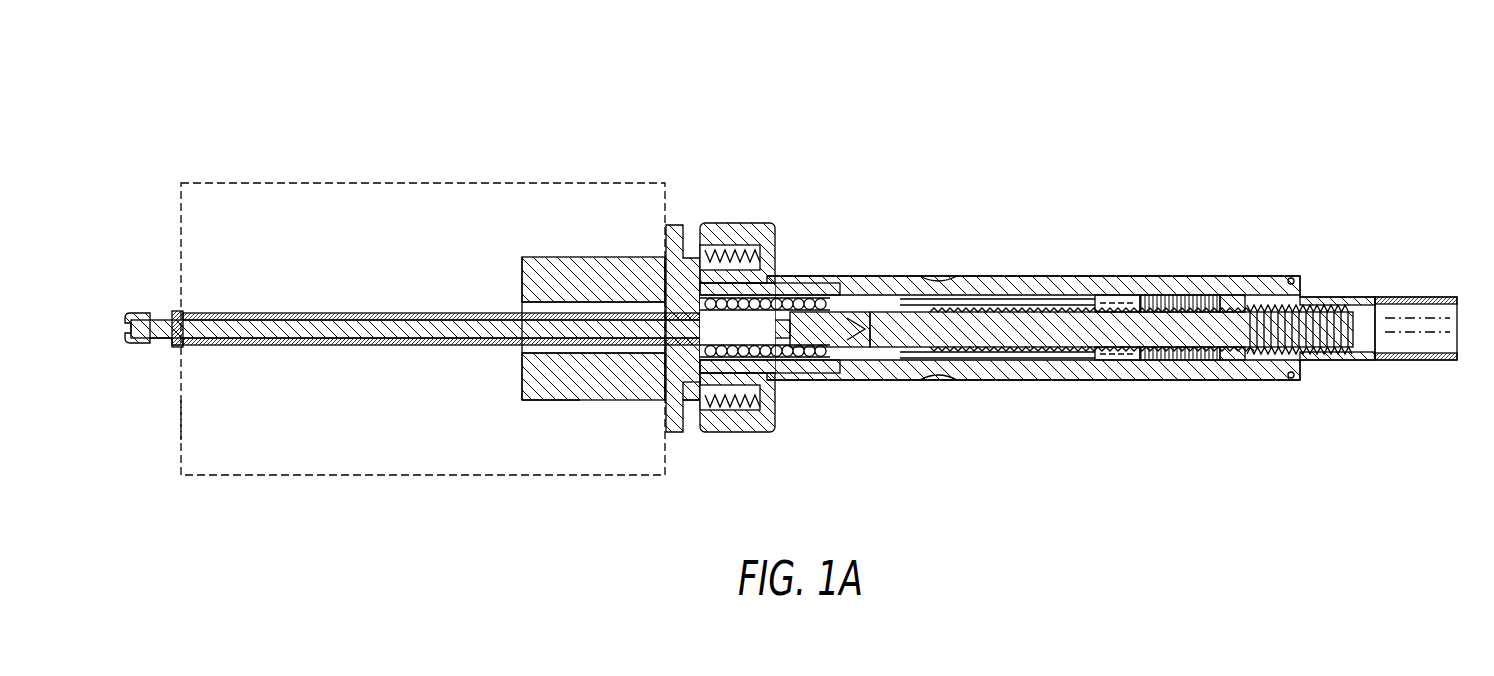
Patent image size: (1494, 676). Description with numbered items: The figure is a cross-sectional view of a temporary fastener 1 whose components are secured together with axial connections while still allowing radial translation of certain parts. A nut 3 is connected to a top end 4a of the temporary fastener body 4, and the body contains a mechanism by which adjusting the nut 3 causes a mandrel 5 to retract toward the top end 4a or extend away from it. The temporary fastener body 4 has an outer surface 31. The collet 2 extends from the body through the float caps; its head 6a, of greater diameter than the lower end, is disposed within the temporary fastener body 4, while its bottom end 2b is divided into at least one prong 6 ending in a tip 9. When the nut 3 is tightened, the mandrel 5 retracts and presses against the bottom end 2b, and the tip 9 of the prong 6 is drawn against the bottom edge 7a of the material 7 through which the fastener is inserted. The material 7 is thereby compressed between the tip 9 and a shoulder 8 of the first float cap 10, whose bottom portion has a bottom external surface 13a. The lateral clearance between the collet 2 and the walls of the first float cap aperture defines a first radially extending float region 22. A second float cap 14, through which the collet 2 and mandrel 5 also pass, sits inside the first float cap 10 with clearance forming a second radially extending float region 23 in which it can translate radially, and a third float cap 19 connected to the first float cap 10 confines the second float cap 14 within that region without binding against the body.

The temporary fastener 1 is at (1109, 138).
The collet 2 is at (430, 318).
The bottom end of the collet 2b is at (172, 353).
The nut 3 is at (1426, 330).
The temporary fastener body 4 is at (989, 392).
The top end of the temporary fastener body 4a is at (1403, 290).
The mandrel 5 is at (131, 306).
The prong 6 is at (254, 313).
The head 6a is at (806, 277).
The material 7 is at (275, 425).
The bottom edge of the material 7a is at (180, 418).
The shoulder 8 is at (662, 246).
The tip 9 is at (177, 309).
The first float cap 10 is at (610, 385).
The bottom external surface 13a is at (540, 398).
The second float cap 14 is at (690, 405).
The third float cap 19 is at (786, 238).
The first radially extending float region 22 is at (580, 345).
The second radially extending float region 23 is at (737, 258).
The outer surface 31 is at (776, 276).